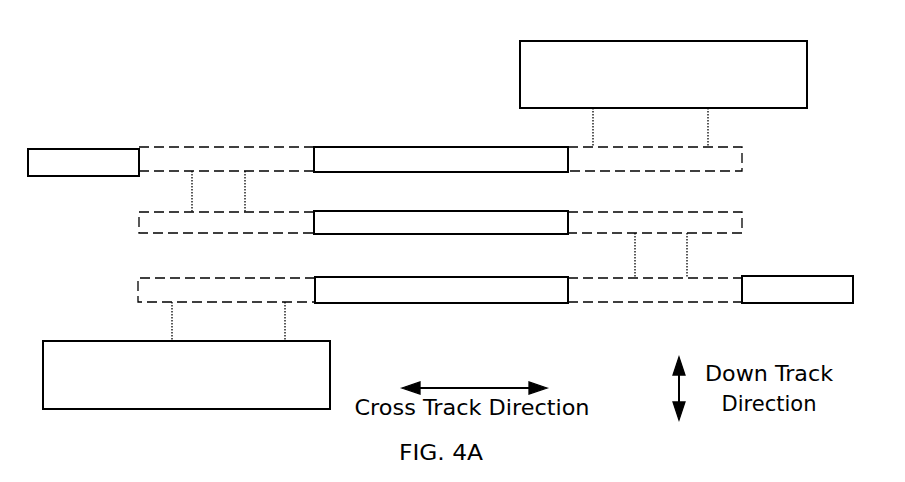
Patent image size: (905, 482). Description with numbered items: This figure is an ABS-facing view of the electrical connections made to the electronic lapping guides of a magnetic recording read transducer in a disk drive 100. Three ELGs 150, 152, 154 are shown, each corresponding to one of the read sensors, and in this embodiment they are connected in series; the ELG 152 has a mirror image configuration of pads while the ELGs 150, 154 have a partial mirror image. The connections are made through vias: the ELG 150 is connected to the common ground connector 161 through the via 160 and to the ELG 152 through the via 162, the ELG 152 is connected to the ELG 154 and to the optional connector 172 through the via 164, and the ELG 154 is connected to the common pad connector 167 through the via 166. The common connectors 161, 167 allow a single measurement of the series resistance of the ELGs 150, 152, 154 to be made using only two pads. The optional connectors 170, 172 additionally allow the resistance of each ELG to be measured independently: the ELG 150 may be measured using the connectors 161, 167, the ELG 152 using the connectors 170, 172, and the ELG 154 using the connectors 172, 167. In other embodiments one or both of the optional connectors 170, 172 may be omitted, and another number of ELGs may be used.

The disk drive 100 is at (465, 36).
The ELG 150 is at (440, 290).
The ELG 152 is at (440, 222).
The ELG 154 is at (440, 159).
The via 160 is at (228, 321).
The common ground connector 161 is at (186, 375).
The via 162 is at (661, 255).
The via 164 is at (218, 191).
The via 166 is at (650, 127).
The common pad connector 167 is at (663, 74).
The optional connector 170 is at (797, 289).
The optional connector 172 is at (83, 162).